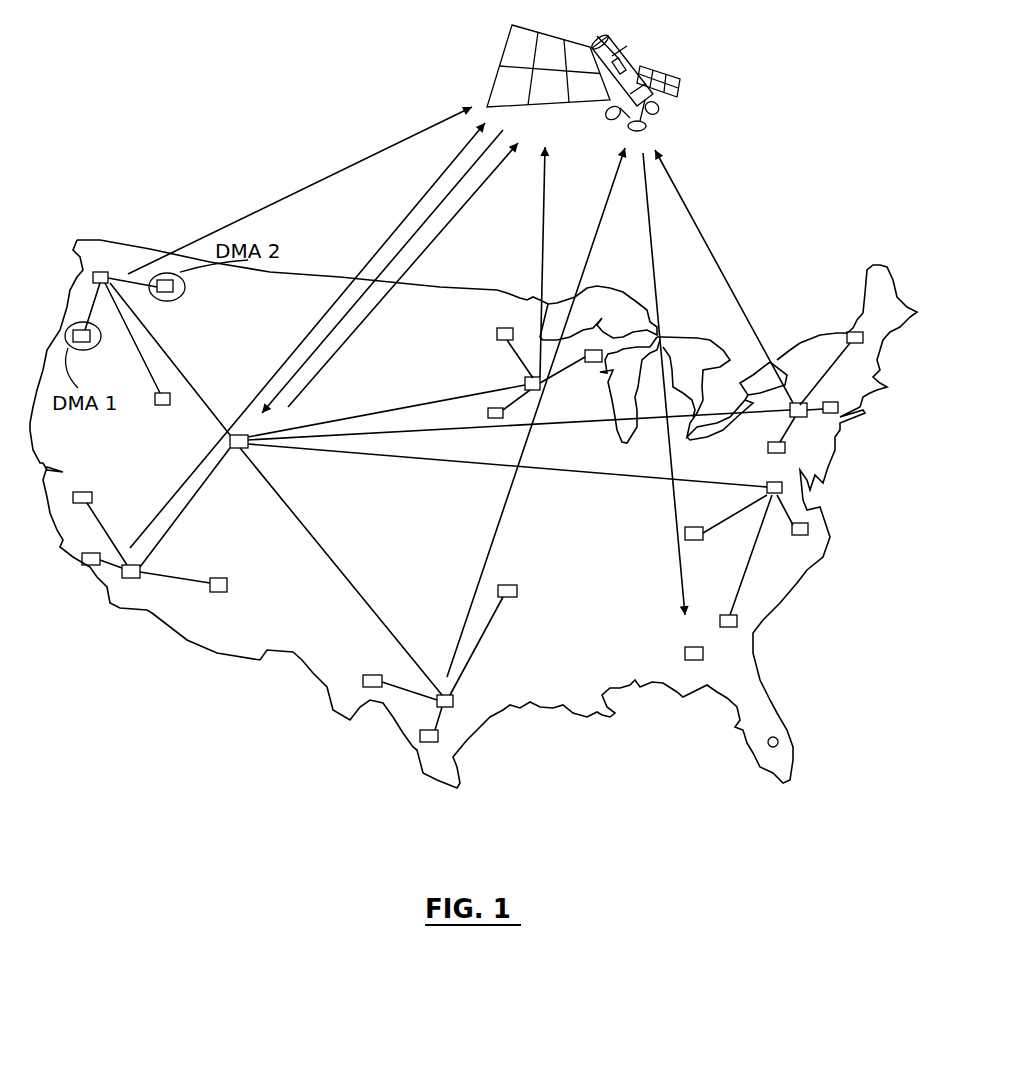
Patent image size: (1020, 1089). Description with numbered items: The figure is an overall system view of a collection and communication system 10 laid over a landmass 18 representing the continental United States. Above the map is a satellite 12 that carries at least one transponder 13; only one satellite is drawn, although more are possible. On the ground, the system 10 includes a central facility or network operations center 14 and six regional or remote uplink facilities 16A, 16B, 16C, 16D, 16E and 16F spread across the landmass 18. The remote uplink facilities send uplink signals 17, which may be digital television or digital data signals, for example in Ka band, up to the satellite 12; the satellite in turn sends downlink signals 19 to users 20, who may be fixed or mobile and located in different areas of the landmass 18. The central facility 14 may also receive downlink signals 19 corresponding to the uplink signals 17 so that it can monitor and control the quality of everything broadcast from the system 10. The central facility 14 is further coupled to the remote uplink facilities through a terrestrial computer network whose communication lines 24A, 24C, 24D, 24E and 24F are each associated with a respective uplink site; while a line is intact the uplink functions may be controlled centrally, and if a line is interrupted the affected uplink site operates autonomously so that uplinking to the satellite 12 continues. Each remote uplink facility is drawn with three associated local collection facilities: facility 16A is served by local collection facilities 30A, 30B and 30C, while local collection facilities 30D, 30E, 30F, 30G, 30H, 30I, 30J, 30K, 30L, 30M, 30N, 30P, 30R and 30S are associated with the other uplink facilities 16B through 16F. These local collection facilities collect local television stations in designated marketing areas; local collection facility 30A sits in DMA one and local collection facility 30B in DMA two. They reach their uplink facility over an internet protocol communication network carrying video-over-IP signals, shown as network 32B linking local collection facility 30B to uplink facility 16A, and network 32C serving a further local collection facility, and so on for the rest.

The collection and communication system 10 is at (135, 158).
The satellite 12 is at (623, 53).
The transponder 13 is at (623, 50).
The central facility or network operations center 14 is at (238, 450).
The regional or remote uplink facility 16A is at (93, 270).
The regional or remote uplink facility 16B is at (132, 580).
The regional or remote uplink facility 16C is at (525, 384).
The regional or remote uplink facility 16D is at (807, 405).
The regional or remote uplink facility 16E is at (768, 484).
The regional or remote uplink facility 16F is at (453, 700).
The uplink signals 17 is at (292, 192).
The landmass 18 is at (787, 723).
The downlink signals 19 is at (440, 200).
The users 20 is at (690, 647).
The communication line 24A is at (168, 350).
The communication line 24C is at (372, 412).
The communication line 24D is at (573, 423).
The communication line 24E is at (580, 470).
The communication line 24F is at (341, 571).
The local collection facility 30A is at (90, 336).
The local collection facility 30B is at (187, 283).
The local collection facility 30C is at (163, 406).
The local collection facility 30D is at (83, 492).
The local collection facility 30E is at (218, 593).
The local collection facility 30F is at (84, 560).
The local collection facility 30G is at (497, 334).
The local collection facility 30H is at (595, 363).
The local collection facility 30I is at (495, 419).
The local collection facility 30J is at (373, 675).
The local collection facility 30K is at (517, 586).
The local collection facility 30L is at (420, 736).
The local collection facility 30M is at (847, 338).
The local collection facility 30N is at (830, 414).
The local collection facility 30P is at (768, 456).
The local collection facility 30R is at (738, 622).
The local collection facility 30S is at (700, 541).
The communication network 32B is at (130, 270).
The communication network 32C is at (160, 378).